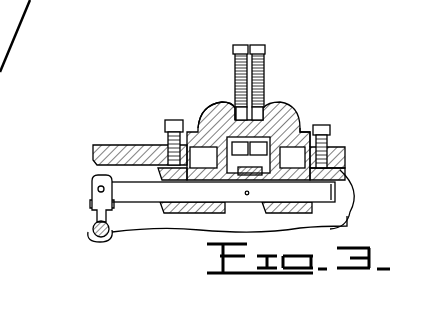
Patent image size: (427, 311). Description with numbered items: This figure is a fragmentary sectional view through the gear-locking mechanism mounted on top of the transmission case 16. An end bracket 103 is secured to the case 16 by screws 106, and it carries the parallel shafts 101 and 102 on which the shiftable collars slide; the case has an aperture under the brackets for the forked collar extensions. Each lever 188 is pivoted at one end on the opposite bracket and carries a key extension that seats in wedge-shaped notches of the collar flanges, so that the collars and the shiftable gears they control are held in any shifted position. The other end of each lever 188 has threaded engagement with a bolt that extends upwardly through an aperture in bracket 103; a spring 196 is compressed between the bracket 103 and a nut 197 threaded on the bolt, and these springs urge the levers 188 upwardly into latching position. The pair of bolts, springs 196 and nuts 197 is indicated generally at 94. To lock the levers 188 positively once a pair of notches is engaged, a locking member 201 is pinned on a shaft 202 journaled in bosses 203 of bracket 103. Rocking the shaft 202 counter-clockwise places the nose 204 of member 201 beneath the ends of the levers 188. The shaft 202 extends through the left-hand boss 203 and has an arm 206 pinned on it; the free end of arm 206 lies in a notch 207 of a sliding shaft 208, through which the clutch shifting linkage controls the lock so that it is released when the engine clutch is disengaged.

The transmission case 16 is at (125, 147).
The adjusting screws 94 is at (250, 67).
The springs 196 is at (235, 67).
The nuts 197 is at (267, 55).
The parallel shaft 101 is at (300, 118).
The parallel shaft 102 is at (213, 120).
The end bracket 103 is at (302, 130).
The screws 106 is at (331, 128).
The lever 188 is at (246, 162).
The locking member 201 is at (243, 213).
The shaft 202 is at (325, 195).
The bosses 203 is at (347, 176).
The nose 204 is at (238, 173).
The arm 206 is at (97, 213).
The notch 207 is at (92, 224).
The shaft 208 is at (90, 245).